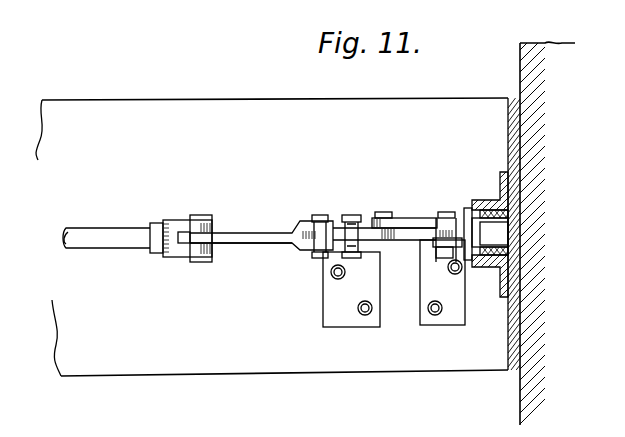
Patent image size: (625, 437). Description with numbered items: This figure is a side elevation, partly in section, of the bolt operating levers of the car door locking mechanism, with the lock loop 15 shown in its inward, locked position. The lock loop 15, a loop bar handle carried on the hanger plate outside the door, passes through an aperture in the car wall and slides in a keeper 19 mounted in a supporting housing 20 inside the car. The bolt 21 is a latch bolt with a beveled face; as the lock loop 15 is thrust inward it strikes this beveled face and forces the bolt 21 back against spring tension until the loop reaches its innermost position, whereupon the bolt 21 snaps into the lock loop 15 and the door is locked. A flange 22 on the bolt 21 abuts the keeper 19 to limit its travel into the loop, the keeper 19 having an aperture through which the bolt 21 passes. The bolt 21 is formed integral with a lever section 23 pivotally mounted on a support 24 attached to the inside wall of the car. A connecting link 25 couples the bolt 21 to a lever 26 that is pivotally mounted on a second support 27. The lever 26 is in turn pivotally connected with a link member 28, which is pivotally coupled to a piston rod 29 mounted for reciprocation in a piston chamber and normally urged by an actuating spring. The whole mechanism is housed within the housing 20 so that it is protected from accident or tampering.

The lock loop 15 is at (521, 213).
The keeper 19 is at (478, 200).
The supporting housing 20 is at (452, 106).
The bolt 21 is at (494, 233).
The flange 22 is at (466, 208).
The lever section 23 is at (443, 232).
The support 24 is at (435, 243).
The connecting link 25 is at (406, 219).
The lever 26 is at (341, 223).
The support 27 is at (332, 293).
The link member 28 is at (256, 233).
The piston rod 29 is at (129, 240).